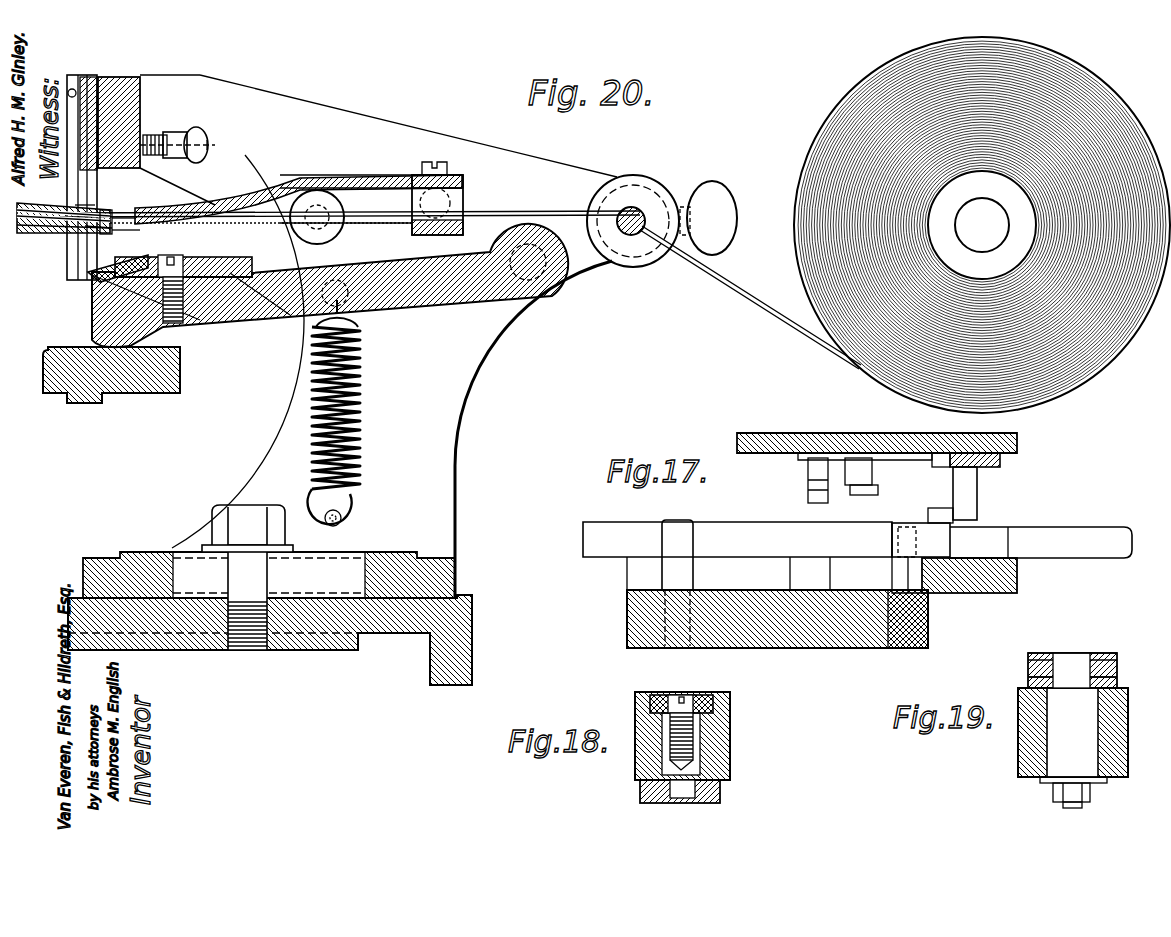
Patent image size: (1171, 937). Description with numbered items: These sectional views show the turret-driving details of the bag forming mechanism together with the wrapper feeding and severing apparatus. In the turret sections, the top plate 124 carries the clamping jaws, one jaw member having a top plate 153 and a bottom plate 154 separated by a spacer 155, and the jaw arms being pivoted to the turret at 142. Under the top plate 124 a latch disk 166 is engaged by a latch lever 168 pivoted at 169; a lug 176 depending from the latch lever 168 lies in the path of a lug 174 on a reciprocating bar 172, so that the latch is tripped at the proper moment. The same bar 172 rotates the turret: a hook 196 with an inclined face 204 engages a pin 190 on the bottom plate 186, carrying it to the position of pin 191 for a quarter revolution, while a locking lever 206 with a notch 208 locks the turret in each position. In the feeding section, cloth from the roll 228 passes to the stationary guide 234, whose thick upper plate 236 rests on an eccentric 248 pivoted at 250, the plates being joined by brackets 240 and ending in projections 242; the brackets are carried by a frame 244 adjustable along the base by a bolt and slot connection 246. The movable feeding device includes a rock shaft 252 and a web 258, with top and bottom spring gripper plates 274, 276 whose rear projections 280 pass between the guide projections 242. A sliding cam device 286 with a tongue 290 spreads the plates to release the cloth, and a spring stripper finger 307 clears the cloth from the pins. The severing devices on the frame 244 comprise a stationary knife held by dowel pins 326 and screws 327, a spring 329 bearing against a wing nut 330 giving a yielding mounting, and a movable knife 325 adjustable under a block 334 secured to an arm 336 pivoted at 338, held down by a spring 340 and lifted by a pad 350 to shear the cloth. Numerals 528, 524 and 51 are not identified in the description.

In FIG. 20, the roll of cloth 228 is at (1095, 345).
In FIG. 20, the rock shaft 252 is at (636, 212).
In FIG. 20, the dowel pins 326 is at (92, 95).
In FIG. 20, the clamp block 528 is at (125, 85).
In FIG. 20, the stationary cloth guiding and holding device 234 is at (363, 170).
In FIG. 20, the spring 329 is at (152, 133).
In FIG. 20, the wing nut 330 is at (190, 128).
In FIG. 20, the screws 327 is at (210, 145).
In FIG. 20, the upper plate 236 is at (282, 186).
In FIG. 20, the eccentric 248 is at (318, 200).
In FIG. 20, the projections 242 is at (125, 213).
In FIG. 20, the pivot of eccentric 250 is at (342, 208).
In FIG. 20, the web 258 is at (355, 226).
In FIG. 20, the brackets 240 is at (465, 196).
In FIG. 20, the pivot of arm 338 is at (548, 288).
In FIG. 20, the arm 336 is at (235, 305).
In FIG. 20, the block 334 is at (228, 248).
In FIG. 20, the movable knife 325 is at (90, 284).
In FIG. 20, the pad 350 is at (122, 380).
In FIG. 20, the top spring gripper plate 274 is at (63, 207).
In FIG. 20, the bottom spring gripper plate 276 is at (59, 239).
In FIG. 20, the plate 524 is at (80, 200).
In FIG. 20, the sliding cam device 286 is at (104, 210).
In FIG. 20, the spring stripper finger 307 is at (120, 204).
In FIG. 20, the tongue 290 is at (88, 228).
In FIG. 20, the projections 280 is at (122, 232).
In FIG. 20, the spring 340 is at (362, 400).
In FIG. 20, the frame 244 is at (443, 440).
In FIG. 20, the base 51 is at (472, 650).
In FIG. 20, the bolt and slot connection 246 is at (195, 556).
In FIG. 17, the top plate 124 is at (1020, 442).
In FIG. 18, the top plate 124 is at (720, 752).
In FIG. 19, the top plate 124 is at (1112, 736).
In FIG. 17, the latch disk 166 is at (805, 458).
In FIG. 17, the latch lever 168 is at (1000, 462).
In FIG. 18, the latch lever 168 is at (710, 792).
In FIG. 17, the lug 176 is at (978, 490).
In FIG. 17, the lug 174 is at (935, 512).
In FIG. 17, the pin 190 is at (858, 540).
In FIG. 17, the pin 191 is at (665, 566).
In FIG. 17, the hook 196 is at (893, 532).
In FIG. 17, the reciprocating bar 172 is at (1068, 540).
In FIG. 17, the inclined face 204 is at (985, 542).
In FIG. 17, the locking lever 206 is at (1010, 574).
In FIG. 17, the bottom plate 186 is at (905, 648).
In FIG. 17, the notch 208 is at (830, 573).
In FIG. 18, the pivot of latch lever 169 is at (670, 757).
In FIG. 19, the pivot 142 is at (1062, 735).
In FIG. 19, the spacer 155 is at (1110, 665).
In FIG. 19, the top plate 153 is at (1100, 655).
In FIG. 19, the bottom plate 154 is at (1112, 680).